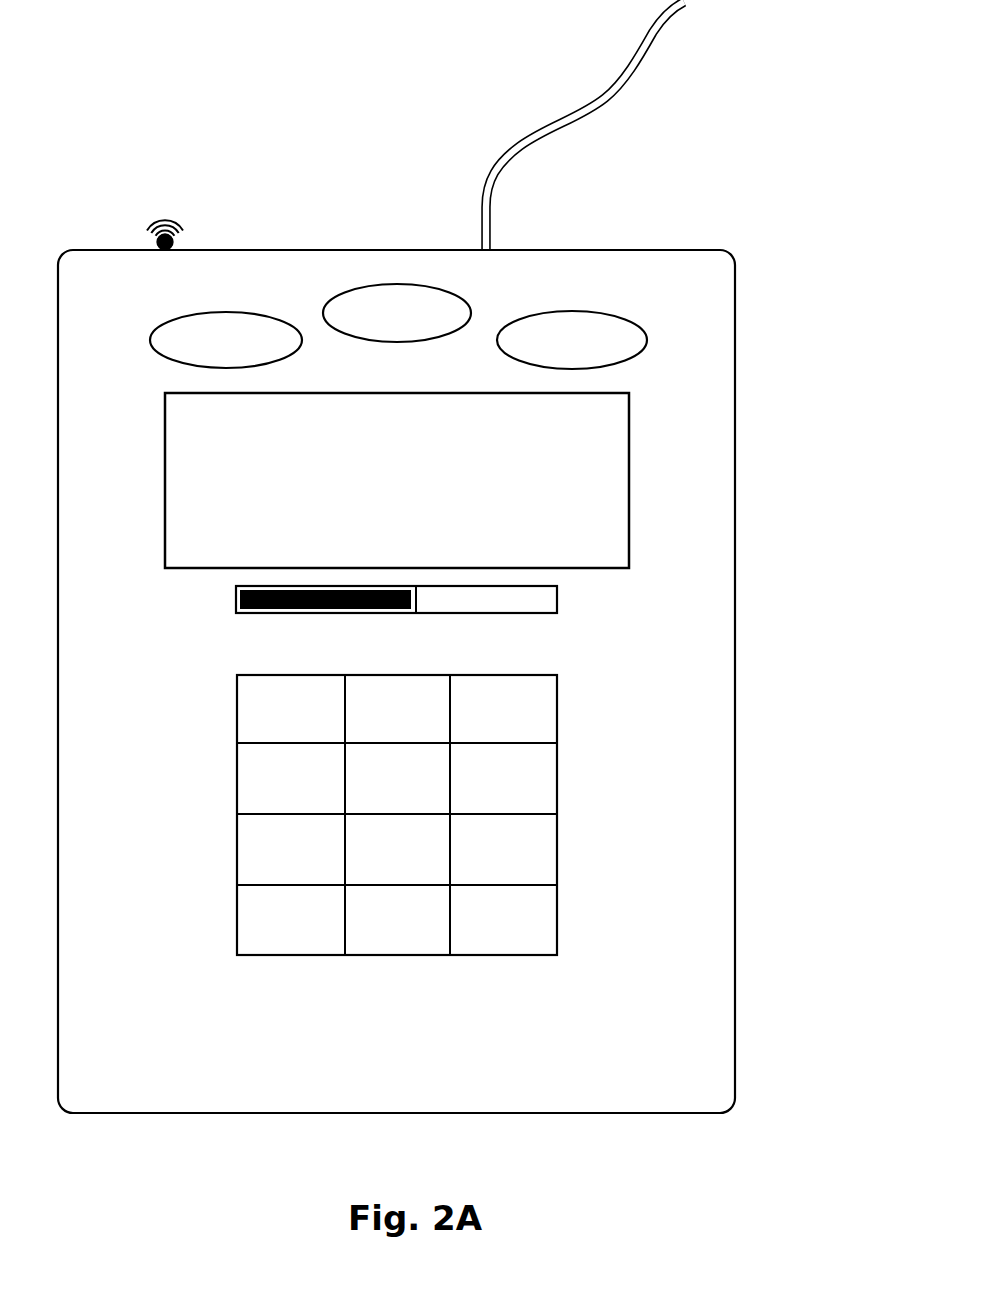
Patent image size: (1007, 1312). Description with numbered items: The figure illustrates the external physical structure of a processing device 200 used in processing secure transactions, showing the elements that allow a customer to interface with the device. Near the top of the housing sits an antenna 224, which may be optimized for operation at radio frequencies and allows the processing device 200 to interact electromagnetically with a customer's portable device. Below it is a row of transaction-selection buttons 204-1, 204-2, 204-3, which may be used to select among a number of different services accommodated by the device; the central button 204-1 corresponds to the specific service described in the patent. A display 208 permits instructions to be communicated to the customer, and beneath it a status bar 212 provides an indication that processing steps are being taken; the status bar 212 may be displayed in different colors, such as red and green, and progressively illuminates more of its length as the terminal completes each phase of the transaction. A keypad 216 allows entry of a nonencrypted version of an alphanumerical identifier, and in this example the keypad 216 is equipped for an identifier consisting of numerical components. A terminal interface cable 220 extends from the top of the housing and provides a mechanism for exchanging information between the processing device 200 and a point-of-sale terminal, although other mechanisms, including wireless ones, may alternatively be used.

The processing device 200 is at (330, 101).
The transaction-selection button 204-1 is at (397, 284).
The transaction-selection button 204-2 is at (226, 312).
The transaction-selection button 204-3 is at (607, 313).
The display 208 is at (630, 444).
The status bar 212 is at (538, 614).
The keypad 216 is at (558, 788).
The terminal interface cable 220 is at (608, 104).
The antenna 224 is at (176, 243).